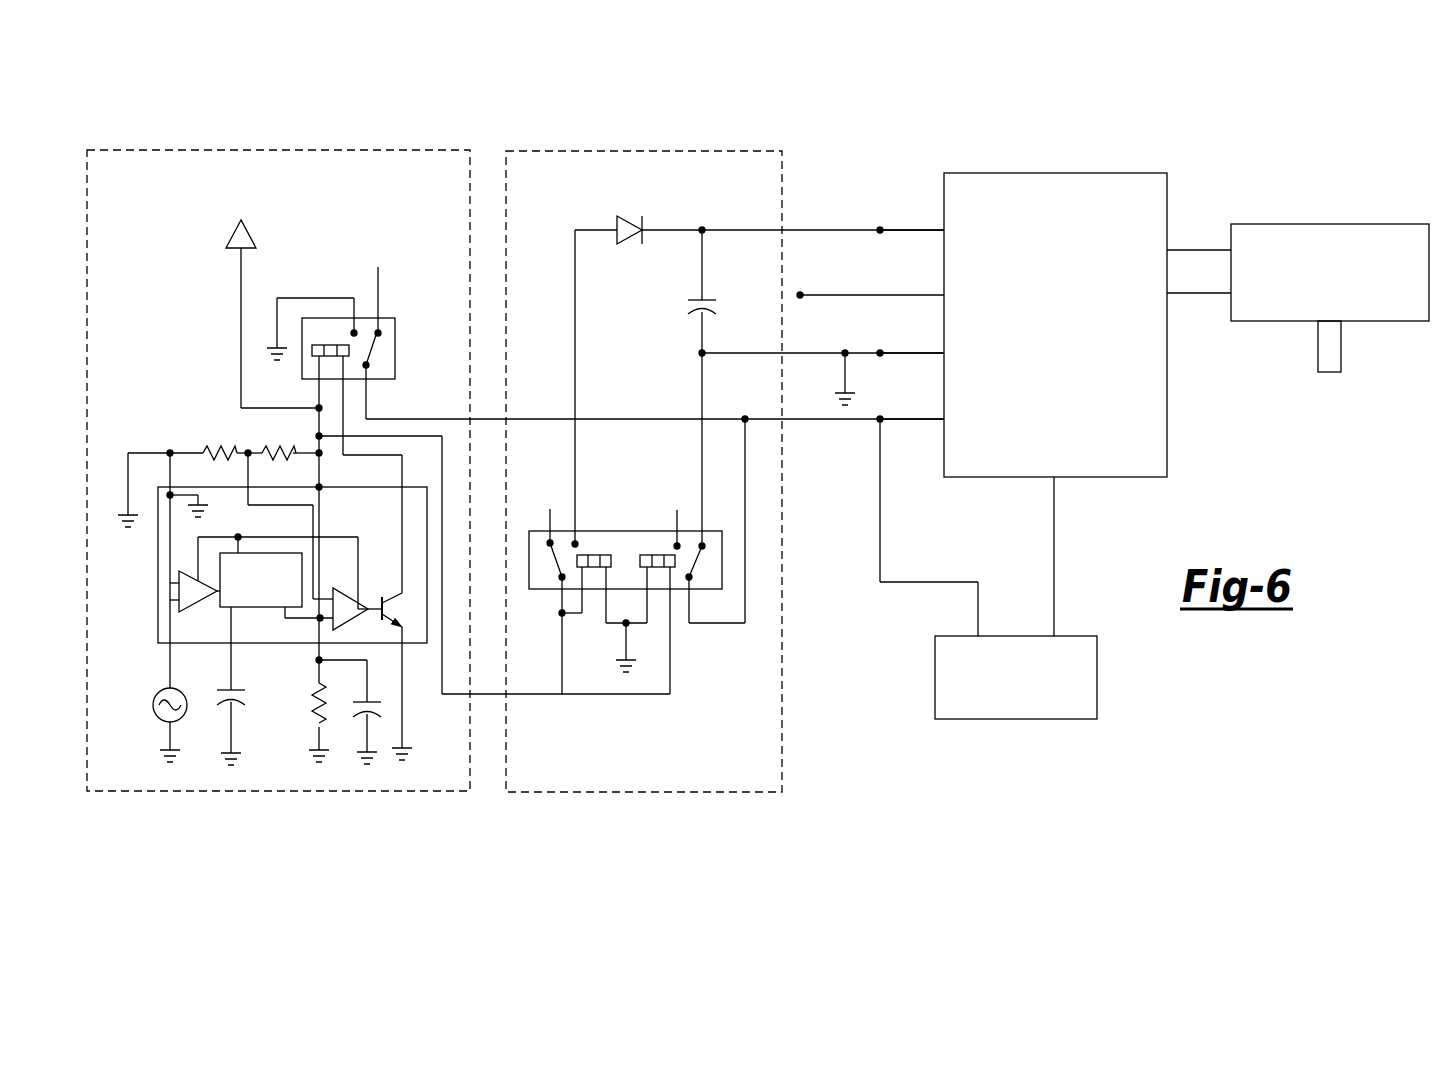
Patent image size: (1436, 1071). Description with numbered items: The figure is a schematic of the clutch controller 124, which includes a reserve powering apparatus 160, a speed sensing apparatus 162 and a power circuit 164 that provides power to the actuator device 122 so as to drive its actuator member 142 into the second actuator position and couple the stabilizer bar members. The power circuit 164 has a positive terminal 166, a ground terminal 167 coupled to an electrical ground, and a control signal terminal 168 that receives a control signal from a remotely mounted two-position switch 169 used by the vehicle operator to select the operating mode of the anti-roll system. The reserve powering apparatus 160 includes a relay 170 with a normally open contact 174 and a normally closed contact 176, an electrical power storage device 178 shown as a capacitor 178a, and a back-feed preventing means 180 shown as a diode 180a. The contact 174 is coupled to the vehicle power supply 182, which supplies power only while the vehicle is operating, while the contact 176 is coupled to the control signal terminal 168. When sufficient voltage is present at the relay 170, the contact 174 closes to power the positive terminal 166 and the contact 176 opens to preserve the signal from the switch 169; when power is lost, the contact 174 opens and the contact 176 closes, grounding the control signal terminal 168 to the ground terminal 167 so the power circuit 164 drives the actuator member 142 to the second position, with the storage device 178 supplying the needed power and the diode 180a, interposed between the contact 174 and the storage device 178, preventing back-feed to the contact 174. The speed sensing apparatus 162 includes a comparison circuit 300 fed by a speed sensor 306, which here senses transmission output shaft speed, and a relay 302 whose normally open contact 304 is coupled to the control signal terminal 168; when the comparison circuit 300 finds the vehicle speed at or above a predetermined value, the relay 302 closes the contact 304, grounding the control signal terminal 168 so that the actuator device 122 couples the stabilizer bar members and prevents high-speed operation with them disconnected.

The controller 124 is at (855, 87).
The speed sensing apparatus 162 is at (220, 133).
The reserve powering apparatus 160 is at (590, 133).
The power circuit 164 is at (1065, 167).
The actuator device 122 is at (1300, 222).
The actuator member 142 is at (1318, 344).
The positive terminal 166 is at (889, 227).
The ground terminal 167 is at (889, 353).
The control signal terminal 168 is at (889, 420).
The 2-position switch 169 is at (1100, 678).
The relay 170 is at (679, 597).
The normally open contact 174 is at (555, 568).
The normally closed contact 176 is at (693, 558).
The electrical power storage device 178 is at (703, 307).
The capacitor 178a is at (707, 290).
The back-feed preventing means 180 is at (660, 238).
The diode 180a is at (633, 240).
The vehicle power supply 182 is at (262, 227).
The comparison circuit 300 is at (152, 610).
The relay 302 is at (367, 328).
The normally open contact 304 is at (373, 347).
The speed sensor 306 is at (148, 703).